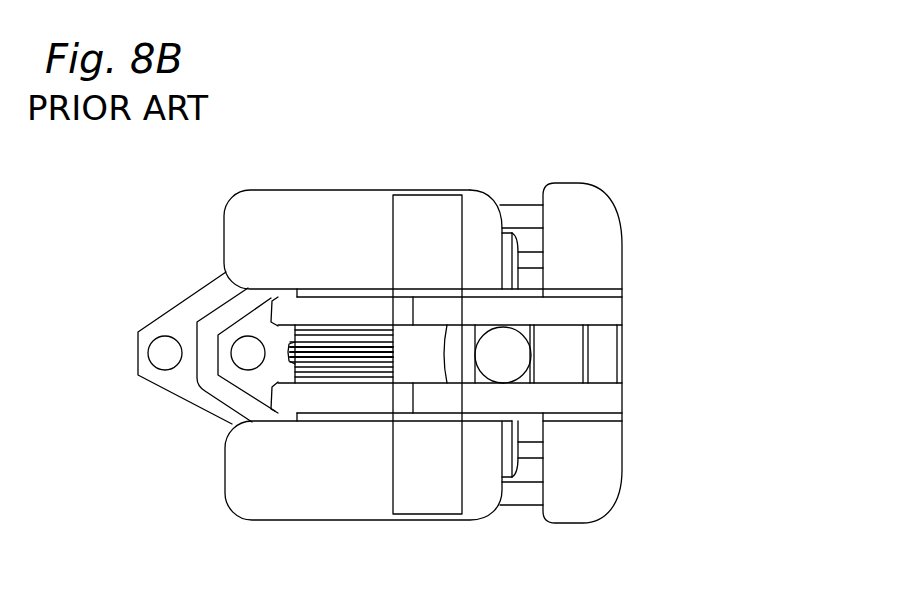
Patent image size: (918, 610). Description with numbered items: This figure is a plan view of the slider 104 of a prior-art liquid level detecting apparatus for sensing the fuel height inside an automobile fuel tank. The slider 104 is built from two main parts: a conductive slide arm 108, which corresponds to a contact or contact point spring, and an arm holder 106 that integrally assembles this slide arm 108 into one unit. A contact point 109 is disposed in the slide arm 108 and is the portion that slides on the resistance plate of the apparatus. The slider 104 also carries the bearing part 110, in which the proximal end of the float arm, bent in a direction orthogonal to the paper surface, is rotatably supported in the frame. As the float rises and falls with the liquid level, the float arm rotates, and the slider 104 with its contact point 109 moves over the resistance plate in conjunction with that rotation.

The slider 104 is at (583, 152).
The arm holder 106 is at (630, 233).
The slide arm 108 is at (138, 337).
The contact point 109 is at (243, 362).
The bearing part 110 is at (512, 360).